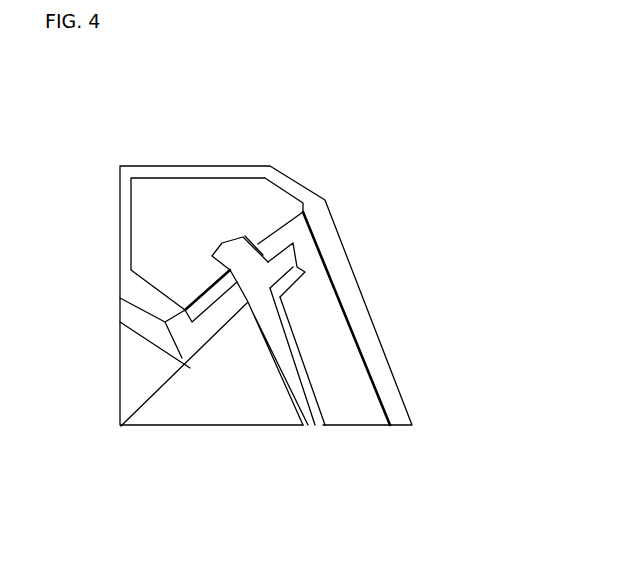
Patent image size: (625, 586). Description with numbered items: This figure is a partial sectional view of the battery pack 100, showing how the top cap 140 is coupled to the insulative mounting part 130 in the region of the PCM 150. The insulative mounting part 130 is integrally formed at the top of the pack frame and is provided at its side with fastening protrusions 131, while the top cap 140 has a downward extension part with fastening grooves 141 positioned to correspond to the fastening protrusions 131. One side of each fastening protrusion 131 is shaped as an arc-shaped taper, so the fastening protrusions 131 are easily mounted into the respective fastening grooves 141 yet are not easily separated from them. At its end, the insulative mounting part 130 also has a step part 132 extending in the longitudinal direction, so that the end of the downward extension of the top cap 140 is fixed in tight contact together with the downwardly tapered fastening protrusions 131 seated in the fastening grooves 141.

The battery pack 100 is at (92, 120).
The insulative mounting part 130 is at (222, 313).
The fastening protrusion 131 is at (252, 250).
The step part 132 is at (152, 307).
The top cap 140 is at (215, 203).
The fastening groove 141 is at (237, 280).
The PCM 150 is at (343, 393).